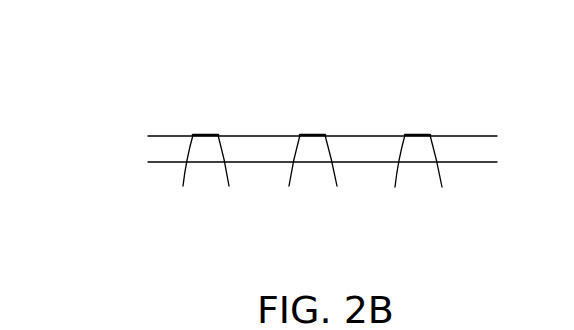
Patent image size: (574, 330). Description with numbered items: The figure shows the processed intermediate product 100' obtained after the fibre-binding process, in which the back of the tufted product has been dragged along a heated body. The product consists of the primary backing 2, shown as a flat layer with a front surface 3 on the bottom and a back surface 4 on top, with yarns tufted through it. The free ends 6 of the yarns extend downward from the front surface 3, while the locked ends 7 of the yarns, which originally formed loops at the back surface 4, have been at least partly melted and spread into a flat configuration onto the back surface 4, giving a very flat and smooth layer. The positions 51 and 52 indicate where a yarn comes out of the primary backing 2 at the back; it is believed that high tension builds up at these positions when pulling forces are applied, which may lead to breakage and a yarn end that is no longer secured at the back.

The processed intermediate product 100' is at (296, 131).
The primary backing 2 is at (492, 148).
The front surface 3 is at (475, 176).
The back surface 4 is at (475, 121).
The free ends 6 is at (183, 169).
The locked ends 7 is at (212, 135).
The position where the yarn comes out of the primary backing 51 is at (339, 121).
The position where the yarn comes out of the primary backing 52 is at (297, 117).